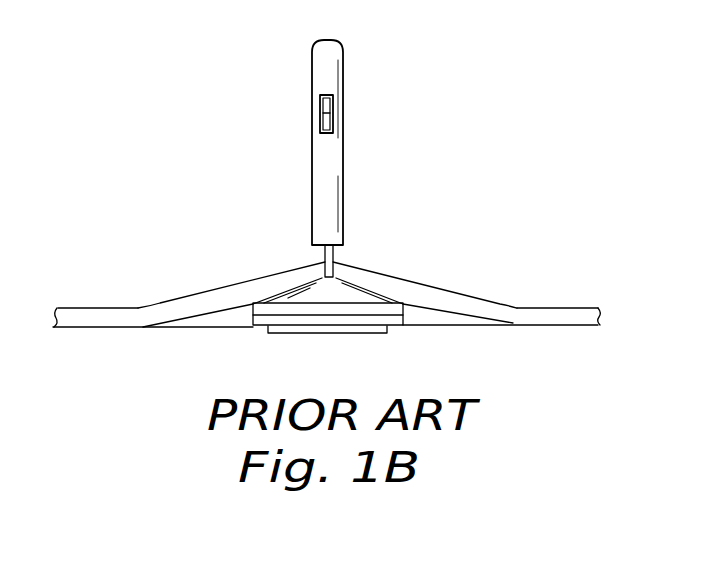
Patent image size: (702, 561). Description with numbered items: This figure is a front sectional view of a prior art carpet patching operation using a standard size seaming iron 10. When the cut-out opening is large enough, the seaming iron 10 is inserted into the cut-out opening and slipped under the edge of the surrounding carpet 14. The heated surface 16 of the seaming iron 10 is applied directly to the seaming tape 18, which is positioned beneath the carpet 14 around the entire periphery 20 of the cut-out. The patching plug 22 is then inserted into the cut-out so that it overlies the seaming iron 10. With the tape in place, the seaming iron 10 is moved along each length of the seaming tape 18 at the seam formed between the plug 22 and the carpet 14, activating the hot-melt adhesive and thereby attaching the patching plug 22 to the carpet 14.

The seaming iron 10 is at (362, 98).
The carpet 14 is at (333, 262).
The heated surface 16 is at (401, 330).
The seaming tape 18 is at (282, 334).
The periphery 20 is at (325, 262).
The patching plug 22 is at (88, 315).